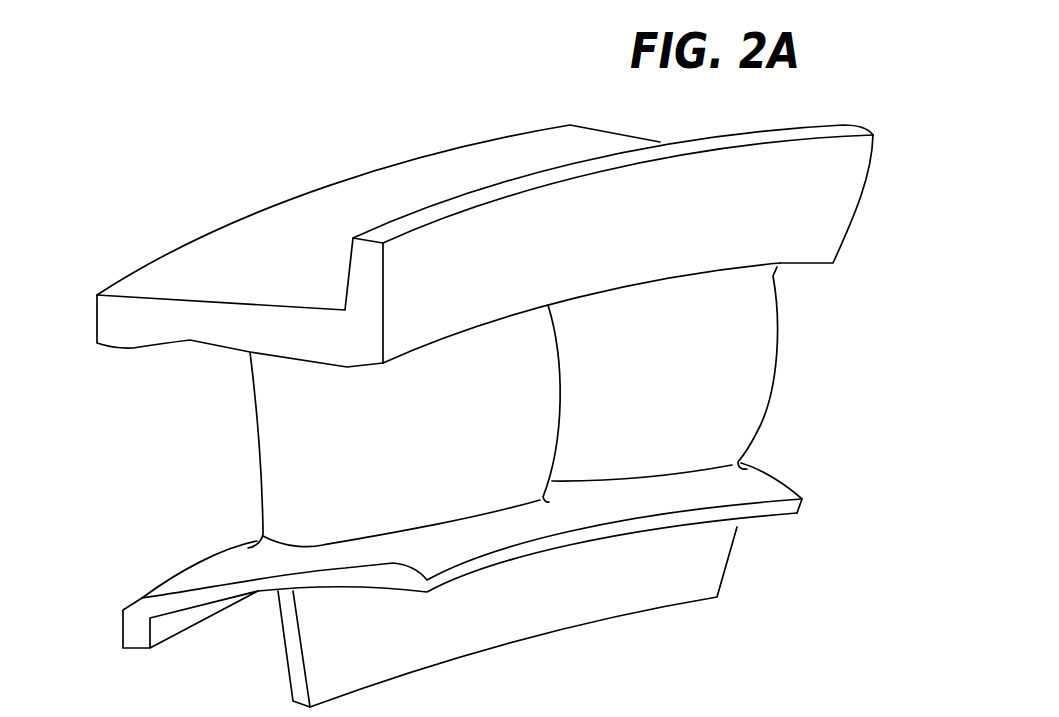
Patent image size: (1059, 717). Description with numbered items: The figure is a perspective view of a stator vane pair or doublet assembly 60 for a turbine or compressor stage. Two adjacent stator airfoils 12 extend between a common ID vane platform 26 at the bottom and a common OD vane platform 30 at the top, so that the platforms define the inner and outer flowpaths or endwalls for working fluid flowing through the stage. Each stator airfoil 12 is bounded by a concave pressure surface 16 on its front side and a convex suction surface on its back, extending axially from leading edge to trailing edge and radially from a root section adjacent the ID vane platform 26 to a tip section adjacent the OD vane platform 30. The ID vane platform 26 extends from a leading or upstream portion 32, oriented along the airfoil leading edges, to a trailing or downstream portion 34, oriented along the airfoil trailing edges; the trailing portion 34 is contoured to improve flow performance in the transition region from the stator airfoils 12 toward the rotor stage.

The stator vane doublet assembly 60 is at (146, 128).
The OD vane platform 30 is at (97, 296).
The stator airfoil 12 is at (240, 432).
The pressure surface 16 is at (434, 437).
The leading portion 32 is at (122, 588).
The ID vane platform 26 is at (197, 572).
The trailing portion 34 is at (836, 490).